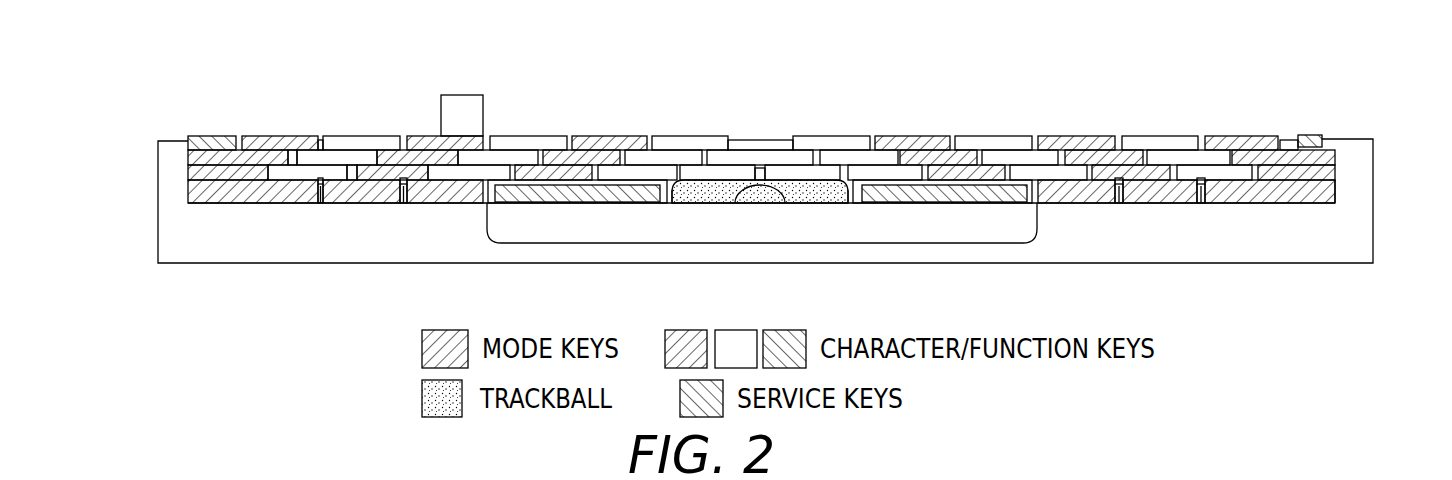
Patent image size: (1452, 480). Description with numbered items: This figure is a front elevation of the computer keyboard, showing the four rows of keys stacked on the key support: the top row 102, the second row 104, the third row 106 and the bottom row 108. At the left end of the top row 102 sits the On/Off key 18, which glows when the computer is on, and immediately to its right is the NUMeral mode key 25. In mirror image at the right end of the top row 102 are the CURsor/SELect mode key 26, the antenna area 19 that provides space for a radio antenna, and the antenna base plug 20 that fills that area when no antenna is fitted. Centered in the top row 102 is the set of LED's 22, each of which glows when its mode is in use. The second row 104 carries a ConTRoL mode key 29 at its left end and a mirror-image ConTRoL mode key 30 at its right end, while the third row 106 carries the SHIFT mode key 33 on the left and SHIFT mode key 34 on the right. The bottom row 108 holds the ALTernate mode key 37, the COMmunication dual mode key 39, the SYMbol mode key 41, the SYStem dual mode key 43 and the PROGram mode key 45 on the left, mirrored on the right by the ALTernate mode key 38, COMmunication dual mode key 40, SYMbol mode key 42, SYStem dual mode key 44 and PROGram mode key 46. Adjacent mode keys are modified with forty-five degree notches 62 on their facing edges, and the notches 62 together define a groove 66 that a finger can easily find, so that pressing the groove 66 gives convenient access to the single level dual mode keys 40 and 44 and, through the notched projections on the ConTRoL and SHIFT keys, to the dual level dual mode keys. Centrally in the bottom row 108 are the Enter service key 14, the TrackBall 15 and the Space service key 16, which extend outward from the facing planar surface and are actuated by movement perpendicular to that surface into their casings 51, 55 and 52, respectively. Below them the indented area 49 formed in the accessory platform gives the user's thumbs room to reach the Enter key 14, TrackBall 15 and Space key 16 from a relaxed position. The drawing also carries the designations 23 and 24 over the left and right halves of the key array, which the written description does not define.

The Enter service key 14 is at (577, 203).
The TrackBall 15 is at (760, 203).
The Space service key 16 is at (935, 203).
The On/Off key 18 is at (210, 136).
The antenna area 19 is at (1293, 136).
The antenna base plug 20 is at (1311, 133).
The LED's 22 is at (765, 135).
The left keyboard section 23 is at (728, 130).
The right keyboard section 24 is at (1198, 130).
The NUMeral mode key 25 is at (256, 136).
The CURsor/SELect mode key 26 is at (1263, 135).
The ConTRoL mode key 29 is at (182, 152).
The ConTRoL mode key 30 is at (1350, 139).
The SHIFT mode key 33 is at (187, 177).
The SHIFT mode key 34 is at (1328, 170).
The ALTernate mode key 37 is at (237, 204).
The ALTernate mode key 38 is at (1263, 203).
The COMmunication single level dual mode key 39 is at (318, 204).
The COMmunication single level dual mode key 40 is at (1200, 203).
The SYMbol mode key 41 is at (358, 204).
The SYMbol mode key 42 is at (1160, 203).
The SYStem single level dual mode key 43 is at (405, 204).
The SYStem single level dual mode key 44 is at (1115, 203).
The PROGram mode key 45 is at (433, 204).
The PROGram mode key 46 is at (1073, 203).
The indented area 49 is at (1007, 232).
The casing 51 is at (663, 203).
The casing 52 is at (858, 203).
The casing 55 is at (710, 203).
The notch 62 is at (317, 179).
The groove 66 is at (319, 179).
The top row 102 is at (182, 144).
The second row 104 is at (1347, 155).
The third row 106 is at (182, 171).
The bottom row 108 is at (1345, 190).